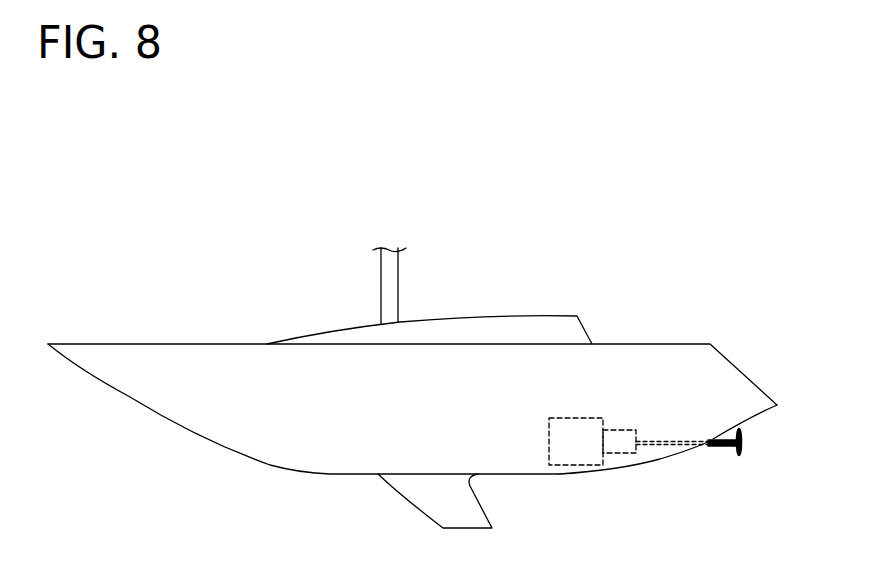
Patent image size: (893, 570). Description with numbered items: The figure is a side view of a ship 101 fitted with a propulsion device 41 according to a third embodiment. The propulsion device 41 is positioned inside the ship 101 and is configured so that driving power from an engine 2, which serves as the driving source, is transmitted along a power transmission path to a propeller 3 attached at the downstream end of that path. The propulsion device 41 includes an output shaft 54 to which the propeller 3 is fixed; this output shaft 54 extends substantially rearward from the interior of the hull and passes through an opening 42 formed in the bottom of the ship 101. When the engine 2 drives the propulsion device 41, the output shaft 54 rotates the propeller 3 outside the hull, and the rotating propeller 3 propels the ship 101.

The ship 101 is at (732, 225).
The propulsion device 41 is at (659, 417).
The opening 42 is at (689, 448).
The engine 2 is at (587, 418).
The output shaft 54 is at (668, 444).
The propeller 3 is at (742, 456).